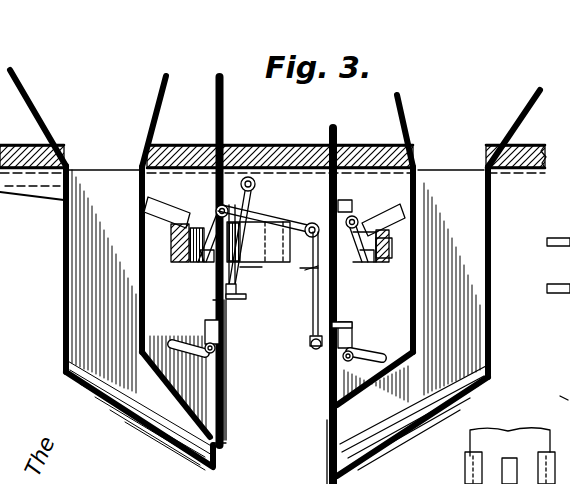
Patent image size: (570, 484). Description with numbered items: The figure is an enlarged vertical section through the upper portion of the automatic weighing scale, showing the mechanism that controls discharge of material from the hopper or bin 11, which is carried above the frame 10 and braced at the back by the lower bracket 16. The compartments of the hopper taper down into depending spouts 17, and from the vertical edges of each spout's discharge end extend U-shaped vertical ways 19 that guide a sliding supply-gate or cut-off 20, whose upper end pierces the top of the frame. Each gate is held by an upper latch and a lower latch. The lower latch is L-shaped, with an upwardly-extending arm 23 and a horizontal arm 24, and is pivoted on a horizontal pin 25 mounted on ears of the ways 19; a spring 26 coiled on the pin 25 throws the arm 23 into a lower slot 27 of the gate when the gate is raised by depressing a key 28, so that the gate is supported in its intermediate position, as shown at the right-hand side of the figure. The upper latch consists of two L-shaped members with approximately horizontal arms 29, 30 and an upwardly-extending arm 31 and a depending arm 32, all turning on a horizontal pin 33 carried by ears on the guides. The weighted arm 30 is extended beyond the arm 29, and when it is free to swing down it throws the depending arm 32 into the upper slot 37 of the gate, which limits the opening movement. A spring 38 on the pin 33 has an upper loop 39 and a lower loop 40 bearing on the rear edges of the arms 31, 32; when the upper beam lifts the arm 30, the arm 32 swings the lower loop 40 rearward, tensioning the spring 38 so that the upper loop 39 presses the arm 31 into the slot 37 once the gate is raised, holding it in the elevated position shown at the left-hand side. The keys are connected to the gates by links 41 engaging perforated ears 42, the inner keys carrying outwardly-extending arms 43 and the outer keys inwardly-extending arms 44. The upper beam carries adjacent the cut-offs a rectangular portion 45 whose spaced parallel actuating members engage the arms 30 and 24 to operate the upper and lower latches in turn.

The frame 10 is at (170, 148).
The hopper or bin 11 is at (275, 120).
The lower bracket 16 is at (135, 420).
The spout 17 is at (64, 285).
The ways 19 is at (226, 430).
The supply-gate or cut-off 20 is at (224, 130).
The arm of lower latch 23 is at (204, 330).
The arm of lower latch 24 is at (160, 392).
The pin 25 is at (216, 352).
The spring 26 is at (195, 348).
The slot 27 is at (227, 322).
The key 28 is at (40, 186).
The horizontal arm 29 is at (390, 248).
The horizontal arm 30 is at (150, 210).
The upwardly-extending arm 31 is at (290, 231).
The depending arm 32 is at (254, 284).
The pin or pivot 33 is at (172, 240).
The upper slot 37 is at (240, 208).
The spring 38 is at (205, 262).
The upper loop 39 is at (218, 206).
The lower loop 40 is at (195, 258).
The link 41 is at (279, 278).
The ear 42 is at (240, 296).
The outwardly-extending arm 43 is at (269, 218).
The inwardly-extending arm 44 is at (250, 177).
The rectangular portion 45 is at (258, 242).